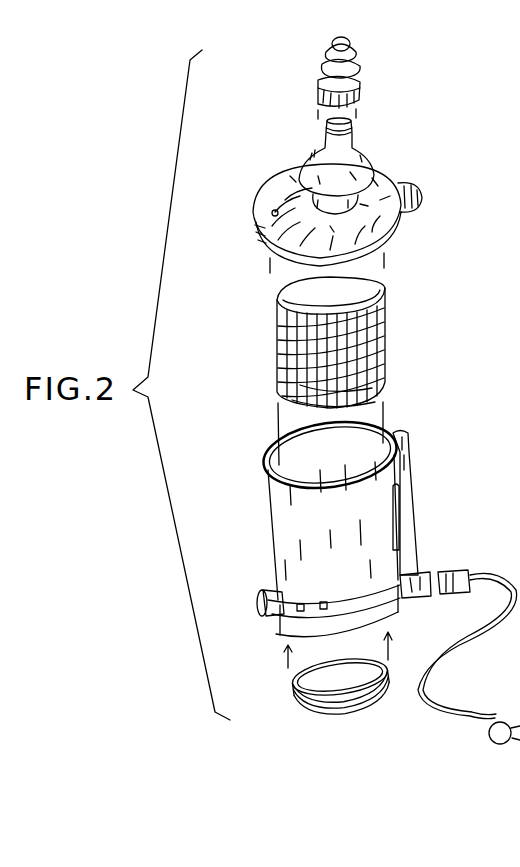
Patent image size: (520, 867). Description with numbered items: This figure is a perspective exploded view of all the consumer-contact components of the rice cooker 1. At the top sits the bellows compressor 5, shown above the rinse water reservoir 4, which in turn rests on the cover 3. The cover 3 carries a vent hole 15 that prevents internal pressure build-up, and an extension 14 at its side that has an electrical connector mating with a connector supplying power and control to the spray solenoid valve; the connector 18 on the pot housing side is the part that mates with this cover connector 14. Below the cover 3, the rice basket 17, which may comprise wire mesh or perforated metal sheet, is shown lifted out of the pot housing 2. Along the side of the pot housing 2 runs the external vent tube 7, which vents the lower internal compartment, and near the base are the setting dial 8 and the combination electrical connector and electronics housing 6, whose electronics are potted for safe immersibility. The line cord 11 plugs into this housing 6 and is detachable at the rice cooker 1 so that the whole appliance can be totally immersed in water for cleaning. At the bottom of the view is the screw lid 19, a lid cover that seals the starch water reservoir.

The rice cooker 1 is at (430, 153).
The pot housing 2 is at (282, 507).
The cover 3 is at (255, 230).
The rinse water reservoir 4 is at (312, 150).
The bellows compressor 5 is at (330, 57).
The combination electrical connector and electronics housing 6 is at (418, 567).
The external vent tube 7 is at (388, 498).
The setting dial 8 is at (264, 595).
The line cord 11 is at (462, 642).
The extension 14 is at (422, 208).
The vent hole 15 is at (255, 200).
The rice basket 17 is at (385, 362).
The connector 18 is at (410, 445).
The screw lid 19 is at (356, 706).